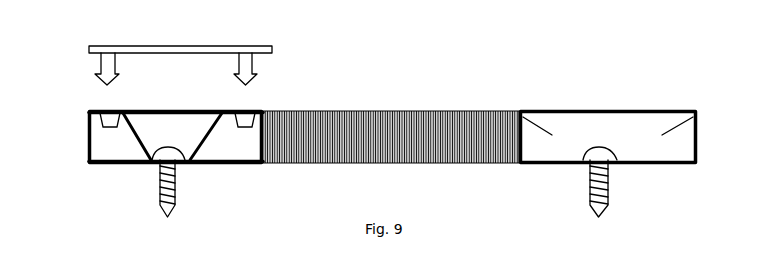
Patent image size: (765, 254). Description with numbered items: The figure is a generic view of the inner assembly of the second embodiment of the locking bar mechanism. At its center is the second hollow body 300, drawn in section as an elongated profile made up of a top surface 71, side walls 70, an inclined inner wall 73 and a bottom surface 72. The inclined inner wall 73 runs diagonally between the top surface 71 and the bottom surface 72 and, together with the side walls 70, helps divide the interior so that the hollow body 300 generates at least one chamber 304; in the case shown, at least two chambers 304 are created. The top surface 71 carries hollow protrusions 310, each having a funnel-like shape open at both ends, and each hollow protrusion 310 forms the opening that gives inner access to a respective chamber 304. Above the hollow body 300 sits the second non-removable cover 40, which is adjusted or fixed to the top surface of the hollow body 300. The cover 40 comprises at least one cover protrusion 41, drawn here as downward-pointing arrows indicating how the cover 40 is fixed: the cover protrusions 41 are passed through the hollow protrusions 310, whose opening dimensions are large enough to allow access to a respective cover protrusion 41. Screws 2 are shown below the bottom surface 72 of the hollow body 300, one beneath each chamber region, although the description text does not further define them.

The screw 2 is at (607, 188).
The second non-removable cover 40 is at (190, 46).
The cover protrusion 41 is at (247, 70).
The side walls 70 is at (145, 147).
The top surface 71 is at (92, 113).
The bottom surface 72 is at (118, 164).
The inclined inner wall 73 is at (140, 126).
The second hollow body 300 is at (82, 153).
The chamber 304 is at (113, 145).
The hollow protrusion 310 is at (100, 123).